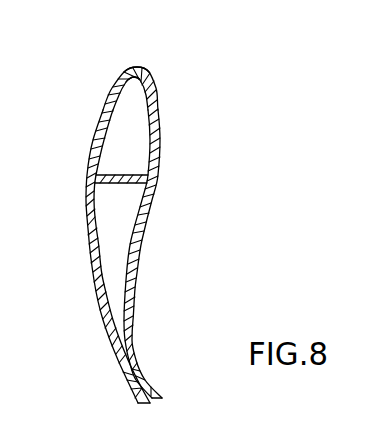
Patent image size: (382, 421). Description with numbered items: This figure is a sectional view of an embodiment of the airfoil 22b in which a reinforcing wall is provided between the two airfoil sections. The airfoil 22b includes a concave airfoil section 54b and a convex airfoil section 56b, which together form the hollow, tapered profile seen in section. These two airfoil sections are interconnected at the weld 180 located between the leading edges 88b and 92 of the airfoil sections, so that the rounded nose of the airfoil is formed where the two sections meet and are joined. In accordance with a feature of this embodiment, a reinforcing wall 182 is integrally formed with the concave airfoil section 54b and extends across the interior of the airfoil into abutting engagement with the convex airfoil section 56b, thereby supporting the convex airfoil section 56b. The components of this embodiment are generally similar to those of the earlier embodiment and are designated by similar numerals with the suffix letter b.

The airfoil 22b is at (182, 207).
The concave airfoil section 54b is at (140, 260).
The convex airfoil section 56b is at (90, 252).
The leading edge 88b is at (140, 74).
The leading edge 92 is at (133, 74).
The weld 180 is at (137, 70).
The reinforcing wall 182 is at (130, 176).